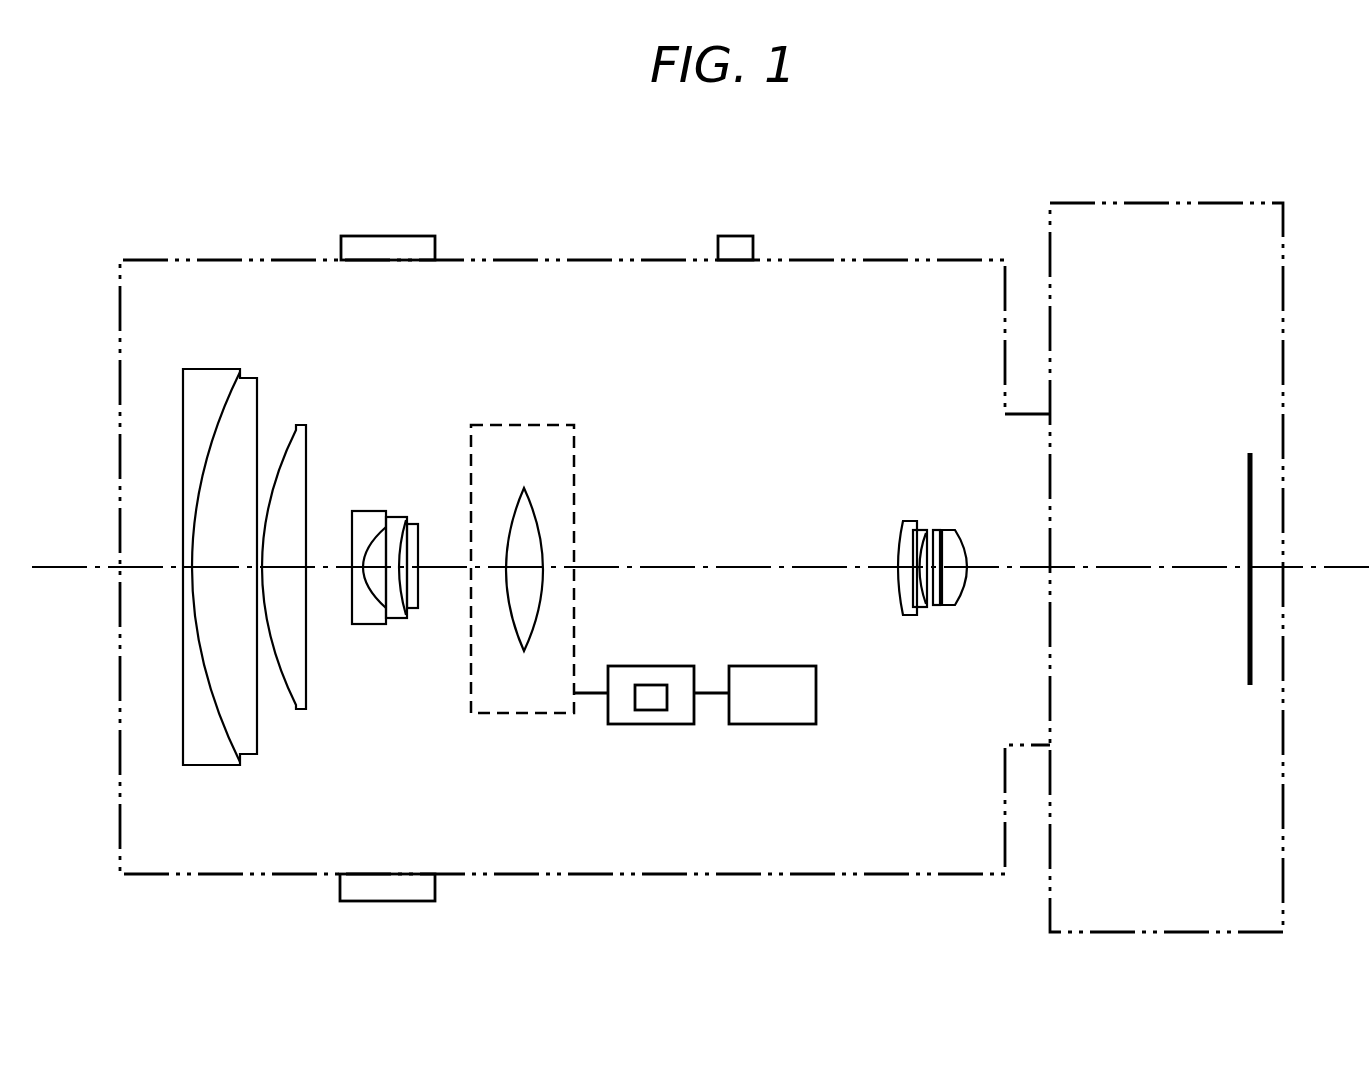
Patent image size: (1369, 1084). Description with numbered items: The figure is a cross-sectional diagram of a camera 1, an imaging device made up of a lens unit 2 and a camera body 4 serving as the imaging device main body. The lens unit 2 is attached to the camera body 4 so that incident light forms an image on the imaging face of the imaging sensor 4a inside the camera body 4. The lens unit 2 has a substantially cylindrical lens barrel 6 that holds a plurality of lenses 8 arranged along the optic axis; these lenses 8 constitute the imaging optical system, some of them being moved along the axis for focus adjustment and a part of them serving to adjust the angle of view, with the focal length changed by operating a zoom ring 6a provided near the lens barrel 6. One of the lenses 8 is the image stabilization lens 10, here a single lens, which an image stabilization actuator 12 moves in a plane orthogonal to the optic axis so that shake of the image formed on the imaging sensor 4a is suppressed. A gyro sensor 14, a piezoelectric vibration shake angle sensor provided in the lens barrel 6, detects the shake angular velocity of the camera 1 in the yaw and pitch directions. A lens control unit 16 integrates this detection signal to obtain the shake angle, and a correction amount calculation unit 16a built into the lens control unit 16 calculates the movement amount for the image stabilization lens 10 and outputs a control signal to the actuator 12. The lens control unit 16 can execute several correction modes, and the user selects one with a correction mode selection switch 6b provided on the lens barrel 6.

The camera 1 is at (858, 200).
The lens unit 2 is at (485, 250).
The camera body 4 is at (1161, 199).
The imaging sensor 4a is at (1248, 645).
The lens barrel 6 is at (565, 878).
The zoom ring 6a is at (387, 236).
The correction mode selection switch 6b is at (735, 236).
The lenses 8 is at (412, 527).
The image stabilization lens 10 is at (515, 615).
The image stabilization actuator 12 is at (522, 527).
The gyro sensor 14 is at (800, 666).
The lens control unit 16 is at (667, 702).
The correction amount calculation unit 16a is at (651, 710).